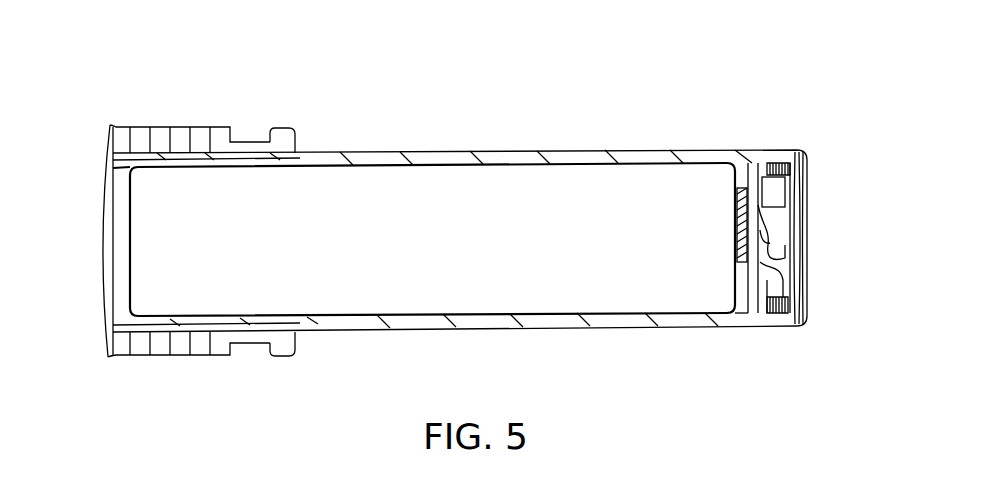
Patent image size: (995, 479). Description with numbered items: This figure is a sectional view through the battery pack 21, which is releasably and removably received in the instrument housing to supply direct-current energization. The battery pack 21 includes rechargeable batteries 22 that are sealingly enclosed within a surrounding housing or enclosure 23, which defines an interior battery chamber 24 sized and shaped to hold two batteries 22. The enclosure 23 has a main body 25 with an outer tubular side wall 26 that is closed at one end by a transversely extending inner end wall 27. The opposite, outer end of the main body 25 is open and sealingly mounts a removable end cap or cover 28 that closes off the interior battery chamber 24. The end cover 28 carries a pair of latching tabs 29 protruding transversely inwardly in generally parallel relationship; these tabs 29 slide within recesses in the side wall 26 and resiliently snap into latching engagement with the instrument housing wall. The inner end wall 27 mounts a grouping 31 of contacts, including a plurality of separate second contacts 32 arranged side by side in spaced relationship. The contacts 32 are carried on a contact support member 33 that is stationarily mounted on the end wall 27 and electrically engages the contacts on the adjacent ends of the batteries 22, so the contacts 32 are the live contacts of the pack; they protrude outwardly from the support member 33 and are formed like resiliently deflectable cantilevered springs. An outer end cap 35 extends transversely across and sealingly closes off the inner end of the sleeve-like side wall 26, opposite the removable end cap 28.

The battery pack 21 is at (606, 100).
The rechargeable batteries 22 is at (478, 197).
The housing or enclosure 23 is at (677, 148).
The interior battery chamber 24 is at (560, 172).
The main body 25 is at (525, 320).
The outer tubular side wall 26 is at (418, 158).
The inner end wall 27 is at (745, 285).
The removable end cap or cover 28 is at (103, 240).
The latching tabs 29 is at (280, 140).
The grouping of contacts 31 is at (770, 210).
The second contacts 32 is at (767, 225).
The contact support member 33 is at (738, 238).
The outer end cap 35 is at (812, 267).